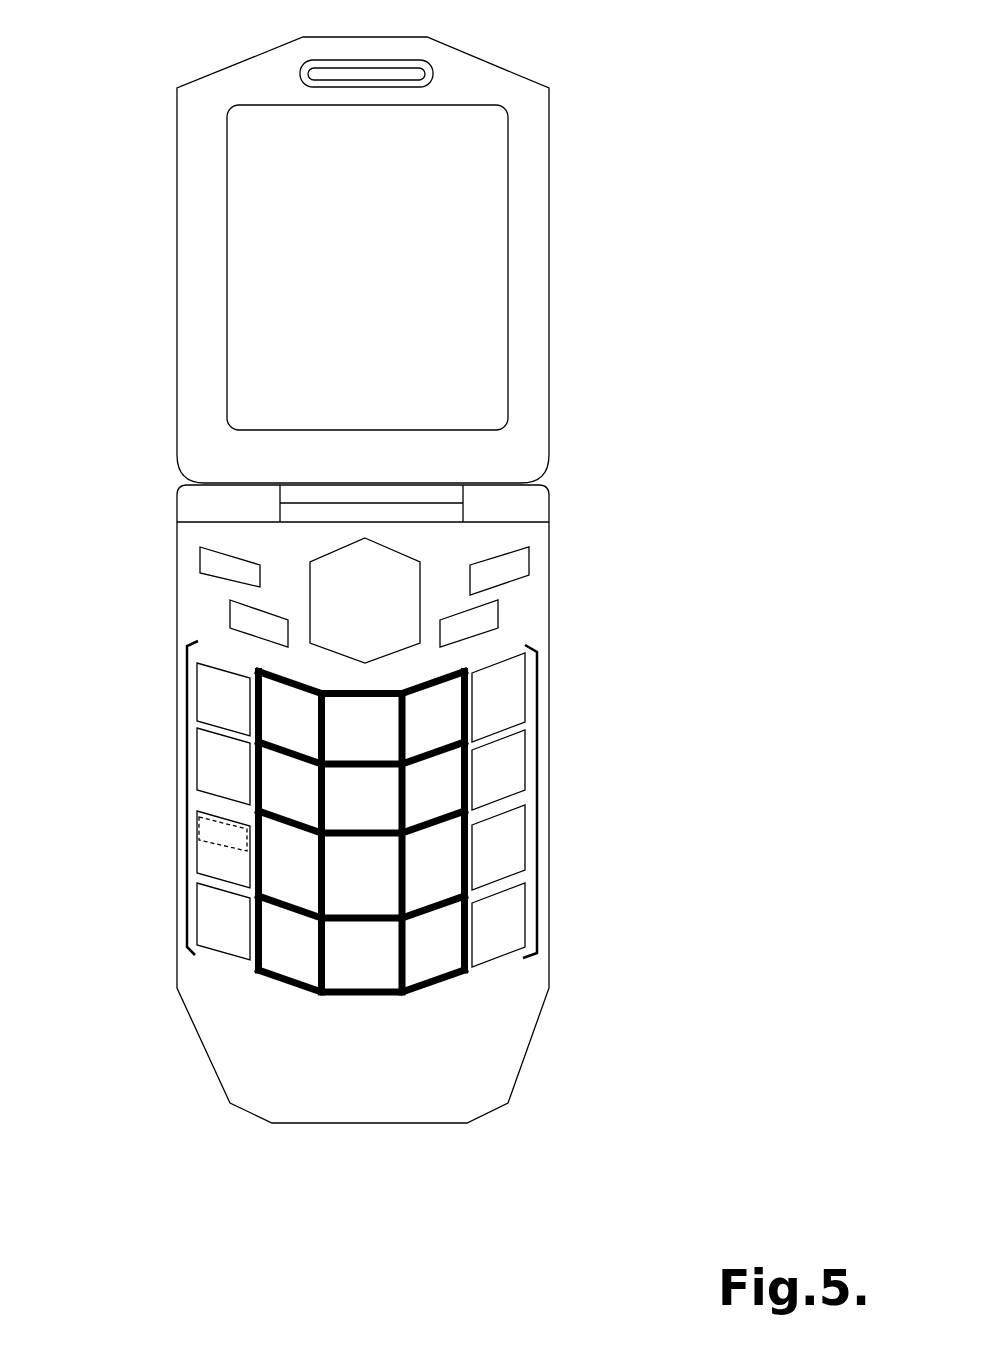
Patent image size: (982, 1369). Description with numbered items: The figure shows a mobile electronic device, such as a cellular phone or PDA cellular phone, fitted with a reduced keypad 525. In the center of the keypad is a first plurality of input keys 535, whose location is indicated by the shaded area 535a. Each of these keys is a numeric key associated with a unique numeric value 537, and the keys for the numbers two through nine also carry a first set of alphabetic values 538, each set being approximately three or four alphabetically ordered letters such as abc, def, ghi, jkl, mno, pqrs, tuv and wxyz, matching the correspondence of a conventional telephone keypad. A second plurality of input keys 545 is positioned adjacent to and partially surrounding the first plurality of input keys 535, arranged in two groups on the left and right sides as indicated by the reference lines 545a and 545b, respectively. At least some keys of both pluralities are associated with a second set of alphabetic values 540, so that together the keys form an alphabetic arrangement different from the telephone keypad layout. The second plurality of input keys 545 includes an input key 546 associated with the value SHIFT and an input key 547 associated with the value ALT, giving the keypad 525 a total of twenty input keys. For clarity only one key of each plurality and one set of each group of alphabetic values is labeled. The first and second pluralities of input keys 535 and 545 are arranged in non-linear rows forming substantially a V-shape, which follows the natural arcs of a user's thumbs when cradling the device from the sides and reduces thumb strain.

The reduced keypad 525 is at (525, 630).
The first plurality of input keys 535 is at (361, 774).
The shaded area 535a is at (450, 980).
The numeric value 537 is at (407, 722).
The first set of alphabetic values 538 is at (337, 738).
The second set of alphabetic values 540 is at (235, 835).
The second plurality of input keys 545 is at (217, 689).
The left group of second plurality of input keys 545a is at (161, 883).
The right group of second plurality of input keys 545b is at (570, 810).
The input key associated with SHIFT 546 is at (232, 945).
The input key associated with ALT 547 is at (508, 922).